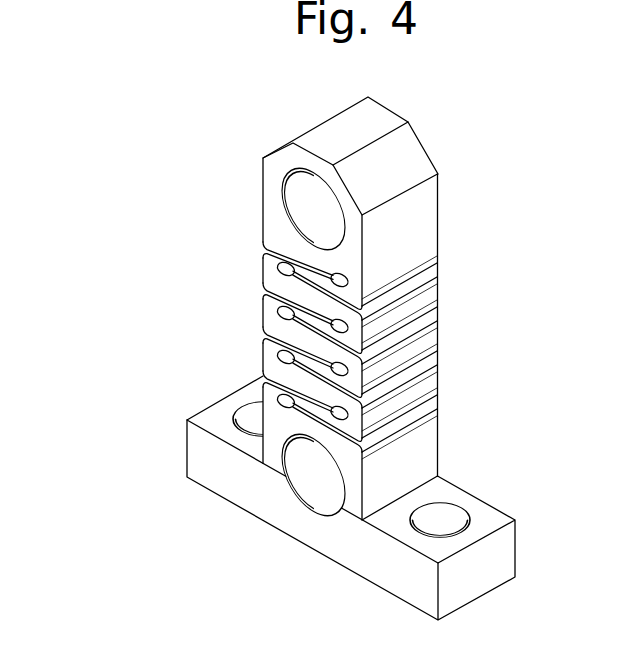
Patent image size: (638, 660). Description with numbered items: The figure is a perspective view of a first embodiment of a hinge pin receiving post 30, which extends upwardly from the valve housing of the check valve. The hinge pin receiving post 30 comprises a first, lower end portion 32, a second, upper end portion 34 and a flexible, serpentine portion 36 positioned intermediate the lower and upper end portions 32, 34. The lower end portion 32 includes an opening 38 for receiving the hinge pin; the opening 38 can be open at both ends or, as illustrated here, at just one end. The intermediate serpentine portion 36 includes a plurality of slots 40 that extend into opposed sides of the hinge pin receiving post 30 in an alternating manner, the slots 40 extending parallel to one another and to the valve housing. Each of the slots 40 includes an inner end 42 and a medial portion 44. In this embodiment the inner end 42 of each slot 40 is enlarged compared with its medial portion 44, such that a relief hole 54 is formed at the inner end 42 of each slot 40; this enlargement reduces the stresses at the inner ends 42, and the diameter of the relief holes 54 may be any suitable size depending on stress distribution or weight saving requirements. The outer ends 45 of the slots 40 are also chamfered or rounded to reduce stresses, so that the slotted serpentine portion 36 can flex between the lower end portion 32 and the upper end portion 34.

The hinge pin receiving post 30 is at (125, 163).
The lower end portion 32 is at (187, 443).
The upper end portion 34 is at (423, 202).
The serpentine portion 36 is at (442, 336).
The opening 38 is at (281, 188).
The slots 40 is at (280, 254).
The inner end 42 is at (347, 415).
The medial portion 44 is at (278, 322).
The outer ends 45 is at (442, 373).
The relief hole 54 is at (350, 323).